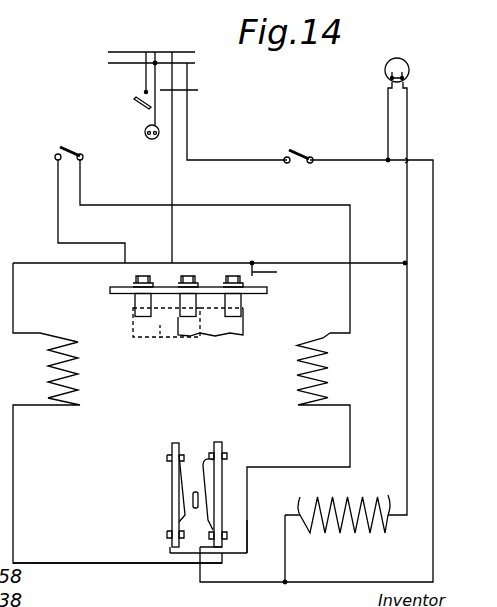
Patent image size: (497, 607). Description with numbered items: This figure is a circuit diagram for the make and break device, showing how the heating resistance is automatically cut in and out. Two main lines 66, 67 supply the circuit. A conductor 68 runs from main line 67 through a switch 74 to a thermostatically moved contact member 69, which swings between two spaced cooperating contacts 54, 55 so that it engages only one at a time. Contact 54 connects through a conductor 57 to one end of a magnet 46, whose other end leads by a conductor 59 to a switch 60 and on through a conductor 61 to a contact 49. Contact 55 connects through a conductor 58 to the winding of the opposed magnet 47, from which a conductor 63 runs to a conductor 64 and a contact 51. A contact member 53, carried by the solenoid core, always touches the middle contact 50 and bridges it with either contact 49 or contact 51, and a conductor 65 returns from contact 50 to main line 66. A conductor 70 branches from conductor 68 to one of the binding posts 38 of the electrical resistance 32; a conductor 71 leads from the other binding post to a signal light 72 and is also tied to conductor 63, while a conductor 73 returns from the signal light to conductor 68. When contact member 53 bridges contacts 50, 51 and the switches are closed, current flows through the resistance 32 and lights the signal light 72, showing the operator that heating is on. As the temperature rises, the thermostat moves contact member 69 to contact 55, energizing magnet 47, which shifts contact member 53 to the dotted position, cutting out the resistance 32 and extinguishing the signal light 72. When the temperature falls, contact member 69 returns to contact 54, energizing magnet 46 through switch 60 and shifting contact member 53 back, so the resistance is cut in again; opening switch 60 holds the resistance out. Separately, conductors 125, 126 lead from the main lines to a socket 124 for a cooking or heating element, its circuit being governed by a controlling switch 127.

The electrical resistance or heating element 32 is at (352, 530).
The contacts or binding posts of the resistance 38 is at (340, 492).
The magnet of solenoid 46 is at (299, 383).
The magnet of solenoid 47 is at (73, 385).
The contact member 49 is at (145, 300).
The contact member 50 is at (190, 298).
The contact member 51 is at (228, 298).
The contact member carried by the core 53 is at (215, 325).
The contact 54 is at (179, 512).
The contact 55 is at (205, 478).
The conductor 57 is at (247, 523).
The conductor 58 is at (117, 557).
The conductor 59 is at (253, 205).
The switch 60 is at (60, 147).
The conductor 61 is at (58, 183).
The conductor 63 is at (42, 263).
The conductor 64 is at (277, 277).
The conductor 65 is at (172, 166).
The main line 66 is at (155, 52).
The main line 67 is at (110, 63).
The conductor 68 is at (188, 148).
The contact member 69 is at (190, 495).
The conductor 70 is at (285, 564).
The conductor 71 is at (406, 188).
The signal light 72 is at (405, 64).
The conductor 73 is at (388, 105).
The switch 74 is at (308, 141).
The socket 124 is at (145, 132).
The conductor 125 is at (146, 91).
The conductor 126 is at (198, 92).
The controlling switch 127 is at (134, 102).